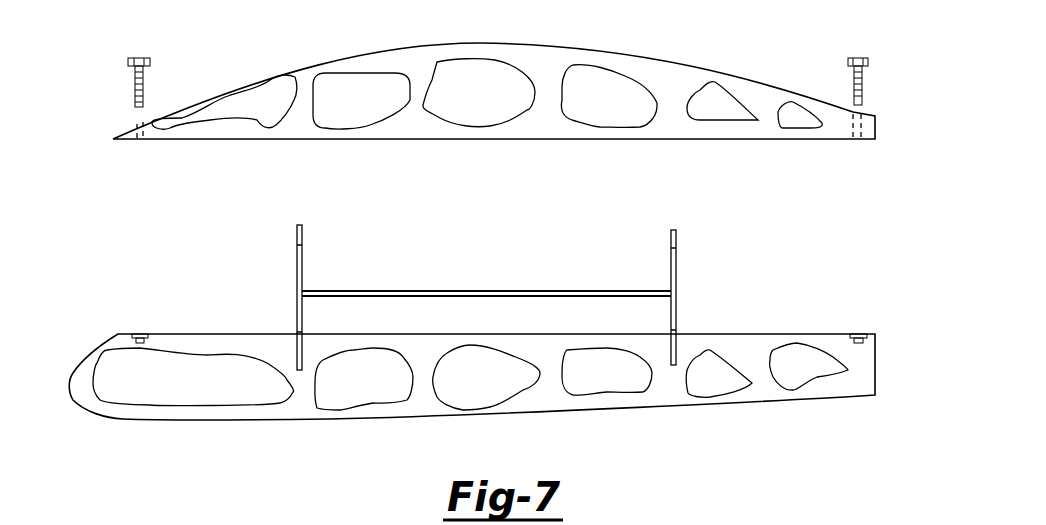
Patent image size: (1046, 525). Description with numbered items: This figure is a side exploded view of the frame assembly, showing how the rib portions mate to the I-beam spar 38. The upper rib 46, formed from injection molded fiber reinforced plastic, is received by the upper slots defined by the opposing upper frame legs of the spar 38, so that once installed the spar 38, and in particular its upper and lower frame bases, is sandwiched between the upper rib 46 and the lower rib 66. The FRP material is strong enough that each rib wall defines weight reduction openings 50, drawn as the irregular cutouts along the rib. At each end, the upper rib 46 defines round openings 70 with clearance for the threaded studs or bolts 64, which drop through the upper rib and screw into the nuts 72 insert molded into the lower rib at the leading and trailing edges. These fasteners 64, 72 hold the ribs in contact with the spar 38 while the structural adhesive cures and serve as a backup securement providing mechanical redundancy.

The spar 38 is at (688, 274).
The upper rib portion 46 is at (270, 66).
The weight reduction openings 50 is at (716, 95).
The bolts 64 is at (133, 88).
The lower airfoil body 66 is at (216, 325).
The round openings 70 is at (137, 143).
The nuts 72 is at (138, 333).